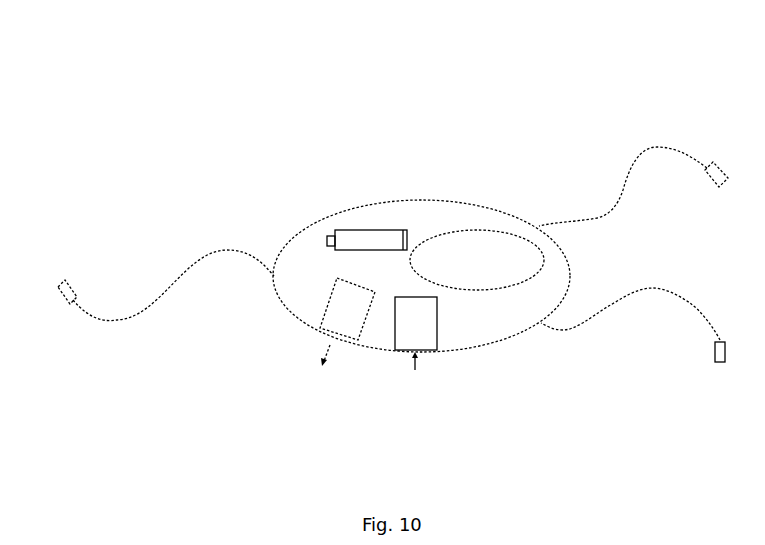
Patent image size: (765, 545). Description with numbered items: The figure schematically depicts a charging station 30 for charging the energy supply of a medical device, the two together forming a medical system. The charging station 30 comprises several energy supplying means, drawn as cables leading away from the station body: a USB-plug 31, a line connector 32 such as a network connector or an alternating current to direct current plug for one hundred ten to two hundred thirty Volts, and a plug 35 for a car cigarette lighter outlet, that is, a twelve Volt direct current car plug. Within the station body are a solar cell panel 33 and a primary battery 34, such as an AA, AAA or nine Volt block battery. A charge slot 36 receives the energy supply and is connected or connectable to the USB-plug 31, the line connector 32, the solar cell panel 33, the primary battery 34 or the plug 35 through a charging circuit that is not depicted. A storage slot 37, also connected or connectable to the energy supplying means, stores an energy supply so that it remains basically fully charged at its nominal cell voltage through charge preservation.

The charging station 30 is at (300, 96).
The USB-plug 31 is at (717, 168).
The line connector 32 is at (715, 358).
The solar cell panel 33 is at (466, 270).
The primary battery 34 is at (362, 230).
The plug for a car cigarette lighter outlet 35 is at (73, 290).
The charge slot 36 is at (405, 329).
The storage slot 37 is at (335, 313).